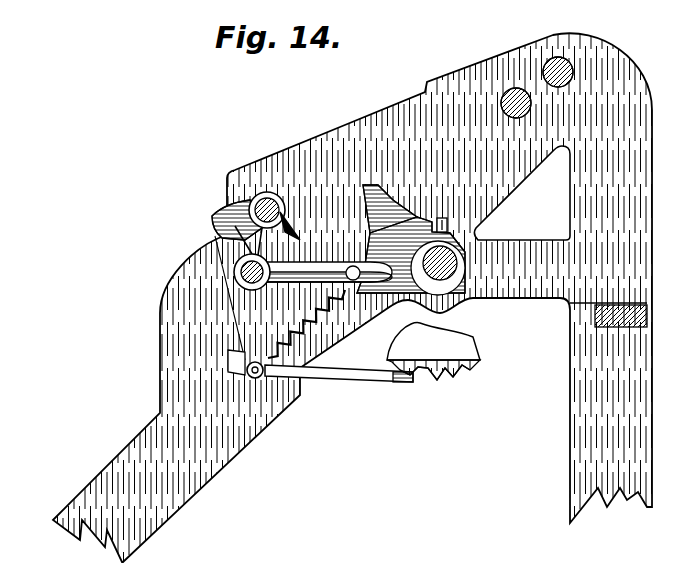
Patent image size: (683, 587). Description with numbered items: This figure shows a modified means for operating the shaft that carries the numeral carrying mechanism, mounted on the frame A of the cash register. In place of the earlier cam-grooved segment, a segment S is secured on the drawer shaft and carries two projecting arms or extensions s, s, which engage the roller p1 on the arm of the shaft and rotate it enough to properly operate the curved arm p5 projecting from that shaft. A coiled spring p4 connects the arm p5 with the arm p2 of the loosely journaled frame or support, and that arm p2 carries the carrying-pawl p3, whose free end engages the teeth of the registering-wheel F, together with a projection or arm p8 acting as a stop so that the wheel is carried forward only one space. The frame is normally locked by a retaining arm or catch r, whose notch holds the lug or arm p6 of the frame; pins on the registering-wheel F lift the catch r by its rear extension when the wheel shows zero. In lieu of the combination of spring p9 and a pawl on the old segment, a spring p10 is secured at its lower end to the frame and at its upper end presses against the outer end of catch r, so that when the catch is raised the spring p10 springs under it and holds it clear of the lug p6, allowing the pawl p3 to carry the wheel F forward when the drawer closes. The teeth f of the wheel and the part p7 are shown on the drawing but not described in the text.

The frame A is at (580, 222).
The retaining arm or catch r is at (225, 214).
The projecting arm or extension s is at (372, 200).
The segment S is at (411, 256).
The registering-wheel F is at (455, 340).
The feed teeth f is at (437, 380).
The projection or roller p1 is at (240, 322).
The arm of frame or support p2 is at (258, 380).
The carrying-pawl p3 is at (339, 384).
The coiled spring p4 is at (226, 364).
The curved arm p5 is at (240, 284).
The lug or arm p6 is at (232, 236).
The lever arm p7 is at (300, 228).
The projection or arm p8 is at (287, 200).
The spring p9 is at (306, 258).
The spring p10 is at (218, 270).